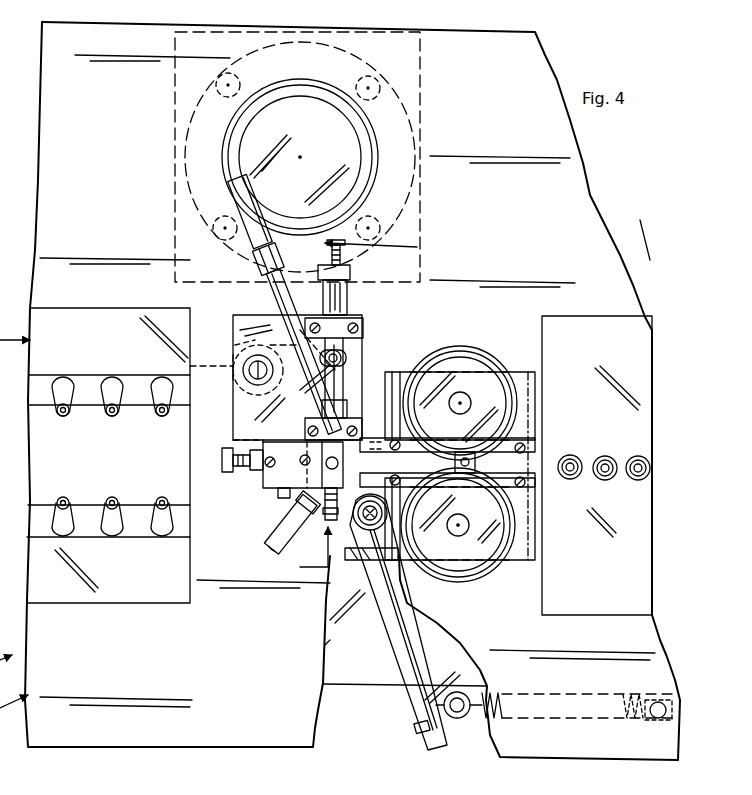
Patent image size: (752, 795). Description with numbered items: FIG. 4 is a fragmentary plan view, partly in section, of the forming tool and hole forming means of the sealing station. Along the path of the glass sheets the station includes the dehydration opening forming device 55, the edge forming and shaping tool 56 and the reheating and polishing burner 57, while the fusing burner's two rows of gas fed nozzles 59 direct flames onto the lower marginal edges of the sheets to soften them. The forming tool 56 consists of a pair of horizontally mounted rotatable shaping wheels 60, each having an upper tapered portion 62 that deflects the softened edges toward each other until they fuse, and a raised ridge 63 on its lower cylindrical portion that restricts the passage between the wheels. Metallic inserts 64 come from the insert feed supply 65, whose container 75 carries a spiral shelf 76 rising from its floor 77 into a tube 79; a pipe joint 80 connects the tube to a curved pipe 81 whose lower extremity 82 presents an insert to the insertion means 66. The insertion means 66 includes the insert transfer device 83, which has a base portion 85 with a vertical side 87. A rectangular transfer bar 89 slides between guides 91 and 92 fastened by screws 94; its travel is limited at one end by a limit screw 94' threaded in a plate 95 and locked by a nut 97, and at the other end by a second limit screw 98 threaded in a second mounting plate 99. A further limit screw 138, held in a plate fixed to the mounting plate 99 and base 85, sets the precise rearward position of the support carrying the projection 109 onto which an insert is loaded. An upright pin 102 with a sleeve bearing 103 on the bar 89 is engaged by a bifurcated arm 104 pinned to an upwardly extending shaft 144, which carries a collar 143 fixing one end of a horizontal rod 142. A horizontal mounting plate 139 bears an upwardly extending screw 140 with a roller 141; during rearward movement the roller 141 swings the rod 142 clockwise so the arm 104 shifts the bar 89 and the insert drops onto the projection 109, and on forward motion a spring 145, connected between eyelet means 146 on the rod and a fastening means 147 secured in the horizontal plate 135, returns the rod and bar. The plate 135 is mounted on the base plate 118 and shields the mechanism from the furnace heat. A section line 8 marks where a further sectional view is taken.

The section line 8 is at (347, 405).
The dehydration opening forming device 55 is at (262, 510).
The edge forming and shaping tool 56 is at (480, 338).
The reheating and polishing burner 57 is at (340, 391).
The gas fed nozzles 59 is at (115, 500).
The rotatable shaping wheels 60 is at (497, 360).
The tapered portion 62 is at (508, 395).
The raised ridge 63 is at (522, 408).
The metallic inserts 64 is at (526, 445).
The insert feed supply 65 is at (380, 120).
The insertion means 66 is at (228, 308).
The cylindrical open-ended container 75 is at (342, 150).
The spiral groove or shelf 76 is at (358, 151).
The floor 77 is at (280, 135).
The tube 79 is at (242, 222).
The pipe joint 80 is at (256, 262).
The curved pipe means 81 is at (280, 300).
The lower extremity 82 is at (336, 416).
The insert transfer device 83 is at (351, 272).
The base portion 85 is at (236, 418).
The vertical side 87 is at (242, 425).
The rectangular transfer bar 89 is at (384, 357).
The guide 91 is at (304, 390).
The guide 92 is at (362, 327).
The screws 94 is at (360, 381).
The limit screw 94' is at (385, 262).
The plate 95 is at (333, 290).
The nut 97 is at (330, 258).
The second limit screw 98 is at (321, 514).
The second mounting plate 99 is at (270, 482).
The upright pin 102 is at (346, 356).
The sleeve bearing 103 is at (340, 362).
The bifurcated arm 104 is at (258, 366).
The projection 109 is at (524, 481).
The base plate 118 is at (354, 660).
The horizontal plate 135 is at (256, 746).
The limit screw 138 is at (230, 460).
The horizontal mounting plate 139 is at (396, 574).
The upwardly extending screw 140 is at (378, 512).
The roller 141 is at (381, 520).
The horizontal rod 142 is at (408, 693).
The collar 143 is at (190, 366).
The upwardly extending shaft 144 is at (260, 372).
The spring 145 is at (486, 722).
The eyelet means 146 is at (457, 718).
The fastening means 147 is at (655, 722).